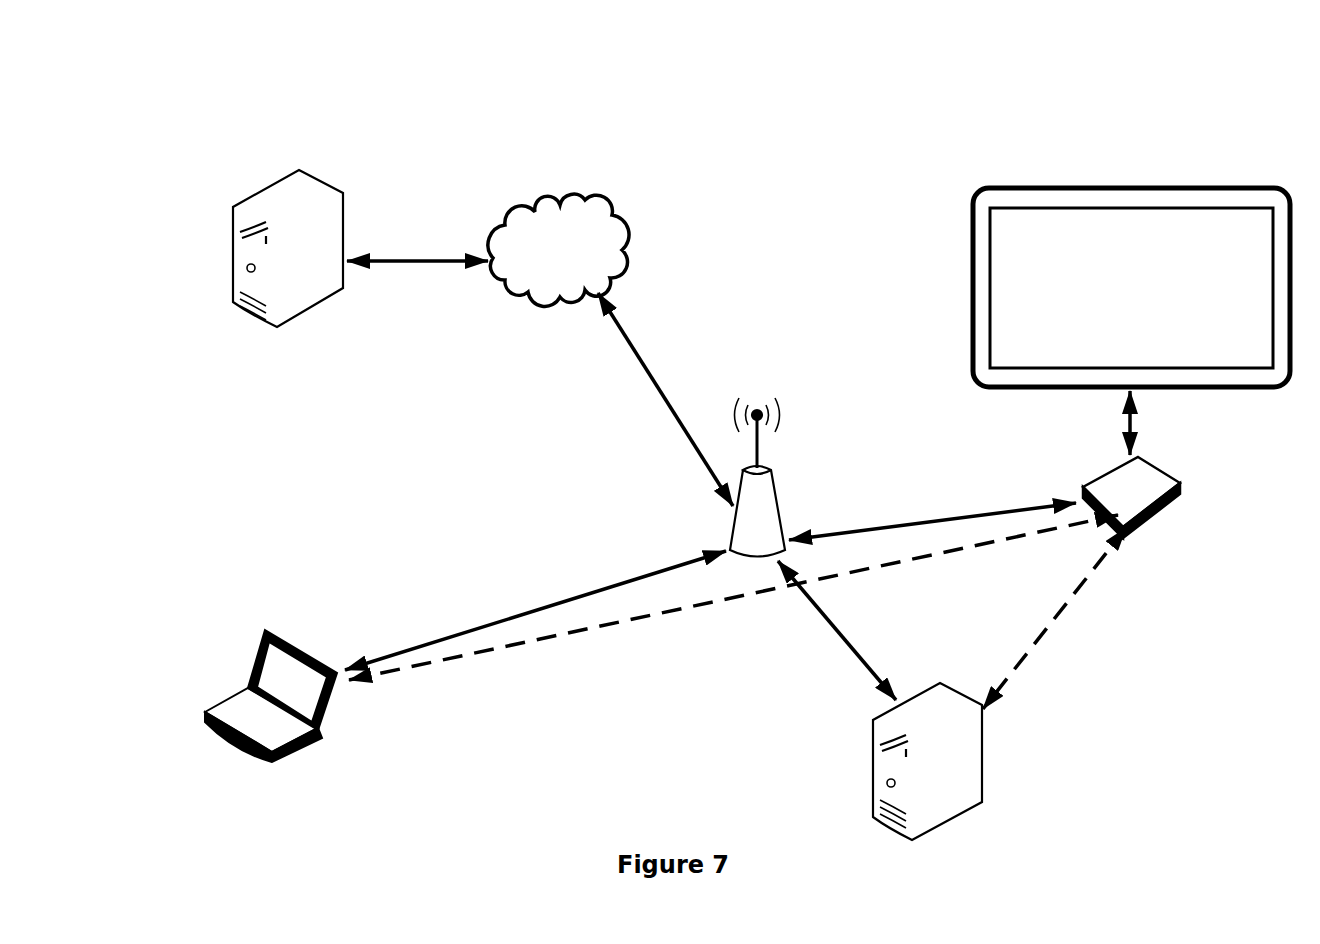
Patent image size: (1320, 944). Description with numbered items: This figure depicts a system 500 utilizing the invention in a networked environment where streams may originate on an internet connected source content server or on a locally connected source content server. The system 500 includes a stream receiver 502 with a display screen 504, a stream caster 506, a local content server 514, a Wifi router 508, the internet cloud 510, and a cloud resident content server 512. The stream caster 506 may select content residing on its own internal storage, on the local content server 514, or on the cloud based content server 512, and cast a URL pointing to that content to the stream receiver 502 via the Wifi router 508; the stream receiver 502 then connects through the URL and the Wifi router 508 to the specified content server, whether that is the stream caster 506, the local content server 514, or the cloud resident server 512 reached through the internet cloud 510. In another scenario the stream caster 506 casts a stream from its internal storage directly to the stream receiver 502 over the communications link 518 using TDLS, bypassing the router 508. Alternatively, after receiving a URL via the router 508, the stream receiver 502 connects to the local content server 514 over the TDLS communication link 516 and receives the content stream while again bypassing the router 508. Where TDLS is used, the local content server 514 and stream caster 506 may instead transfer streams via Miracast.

The system 500 is at (792, 84).
The stream receiver 502 is at (1187, 483).
The display screen 504 is at (1159, 186).
The stream caster 506 is at (276, 622).
The Wifi router 508 is at (786, 505).
The internet cloud 510 is at (560, 196).
The cloud resident content server 512 is at (304, 158).
The local content server 514 is at (866, 774).
The TDLS communication link 516 is at (1054, 600).
The communications link 518 is at (658, 620).